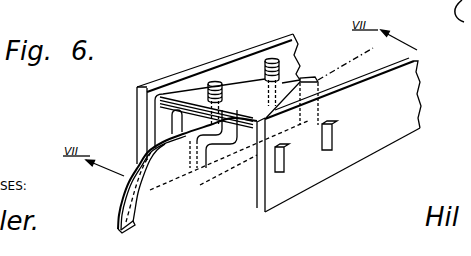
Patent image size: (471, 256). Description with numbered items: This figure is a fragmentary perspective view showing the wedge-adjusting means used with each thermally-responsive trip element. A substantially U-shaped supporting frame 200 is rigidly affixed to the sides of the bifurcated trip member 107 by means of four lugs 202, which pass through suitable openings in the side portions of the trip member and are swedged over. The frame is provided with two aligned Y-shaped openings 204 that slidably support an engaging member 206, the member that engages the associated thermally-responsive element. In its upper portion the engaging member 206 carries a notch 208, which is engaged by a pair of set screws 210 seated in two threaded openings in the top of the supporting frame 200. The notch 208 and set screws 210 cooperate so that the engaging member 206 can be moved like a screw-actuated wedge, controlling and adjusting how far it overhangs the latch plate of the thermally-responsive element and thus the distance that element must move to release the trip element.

The bifurcated trip member 107 is at (196, 46).
The supporting frame 200 is at (251, 90).
The lug 202 is at (334, 126).
The Y-shaped opening 204 is at (172, 122).
The engaging member 206 is at (181, 171).
The notch 208 is at (223, 147).
The set screw 210 is at (265, 61).